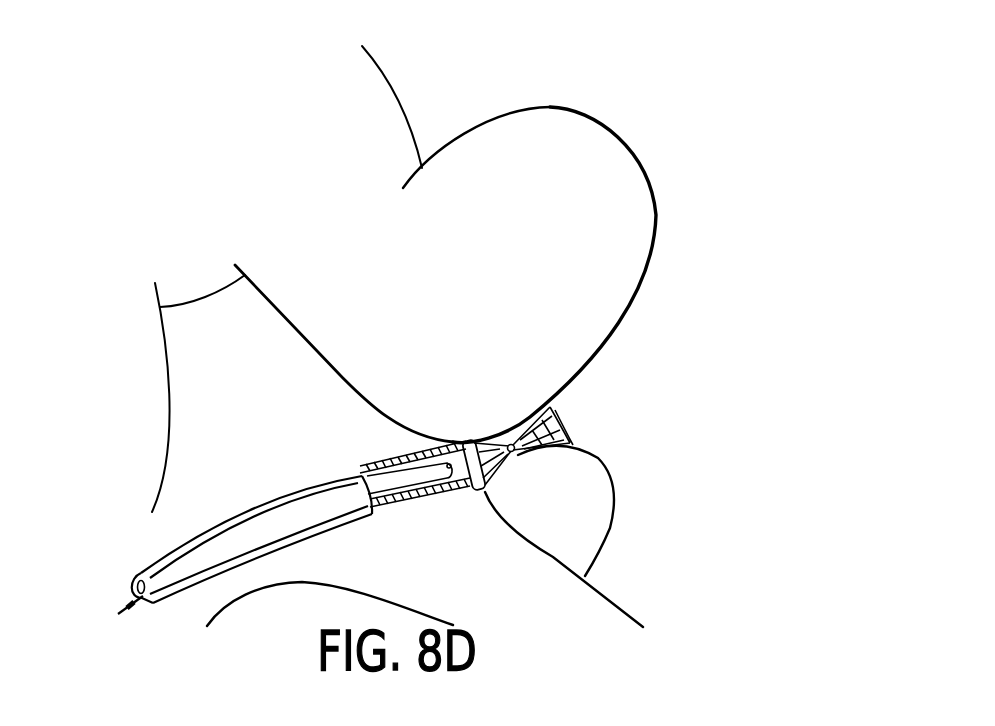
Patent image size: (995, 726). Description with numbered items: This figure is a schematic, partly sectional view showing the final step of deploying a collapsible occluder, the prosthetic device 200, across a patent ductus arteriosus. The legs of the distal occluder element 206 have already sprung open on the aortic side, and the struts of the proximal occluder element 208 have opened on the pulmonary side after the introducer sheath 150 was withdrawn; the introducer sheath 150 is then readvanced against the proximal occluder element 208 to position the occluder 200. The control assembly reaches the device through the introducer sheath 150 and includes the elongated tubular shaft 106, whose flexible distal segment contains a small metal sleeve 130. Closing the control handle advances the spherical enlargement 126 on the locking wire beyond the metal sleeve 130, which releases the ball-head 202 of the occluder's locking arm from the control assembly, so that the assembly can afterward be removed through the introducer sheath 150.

The introducer sheath 150 is at (270, 517).
The small metal sleeve 130 is at (413, 459).
The elongated tubular shaft 106 is at (392, 488).
The spherical enlargement 126 is at (443, 488).
The proximal occluder element 208 is at (483, 492).
The ball-head 202 is at (497, 434).
The prosthetic device 200 is at (512, 454).
The distal occluder element 206 is at (514, 447).